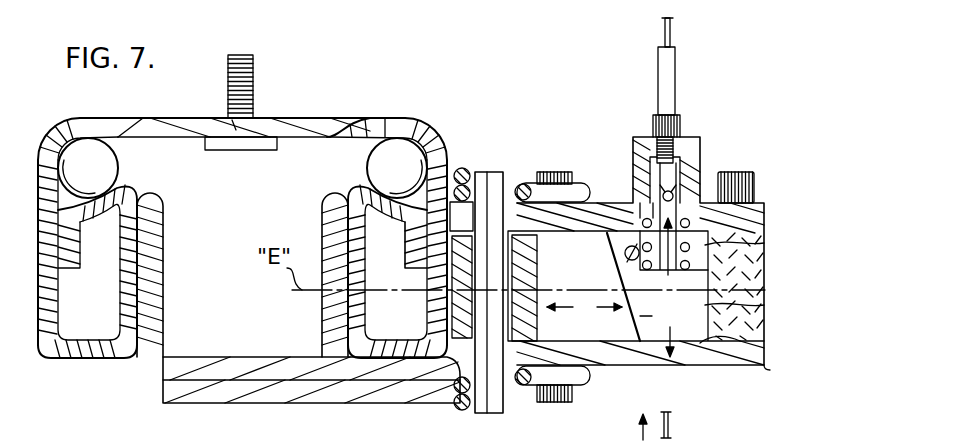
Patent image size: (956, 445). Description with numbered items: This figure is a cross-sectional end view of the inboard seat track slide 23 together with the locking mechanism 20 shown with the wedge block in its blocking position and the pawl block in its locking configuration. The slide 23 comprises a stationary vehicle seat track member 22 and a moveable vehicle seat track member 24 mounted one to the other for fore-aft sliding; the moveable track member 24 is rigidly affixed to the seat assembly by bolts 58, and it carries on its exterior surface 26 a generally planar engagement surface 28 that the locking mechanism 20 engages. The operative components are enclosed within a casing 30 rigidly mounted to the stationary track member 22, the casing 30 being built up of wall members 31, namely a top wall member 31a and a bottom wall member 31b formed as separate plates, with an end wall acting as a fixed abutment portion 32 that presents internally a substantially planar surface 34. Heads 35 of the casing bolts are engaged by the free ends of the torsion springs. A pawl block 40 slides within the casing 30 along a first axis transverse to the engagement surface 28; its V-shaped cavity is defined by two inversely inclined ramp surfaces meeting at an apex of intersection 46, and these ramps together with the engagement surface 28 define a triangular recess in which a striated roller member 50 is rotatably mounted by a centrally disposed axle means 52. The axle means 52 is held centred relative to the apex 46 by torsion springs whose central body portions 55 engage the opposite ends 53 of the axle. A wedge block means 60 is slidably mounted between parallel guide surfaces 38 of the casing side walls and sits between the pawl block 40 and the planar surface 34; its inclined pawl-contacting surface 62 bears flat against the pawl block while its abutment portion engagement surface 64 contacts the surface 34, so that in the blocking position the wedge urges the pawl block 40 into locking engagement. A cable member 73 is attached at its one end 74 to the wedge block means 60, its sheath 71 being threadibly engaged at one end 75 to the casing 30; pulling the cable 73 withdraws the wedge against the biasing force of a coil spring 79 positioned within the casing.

The locking mechanism 20 is at (537, 95).
The stationary vehicle seat track member 22 is at (322, 375).
The inboard seat track slide 23 is at (77, 356).
The moveable vehicle seat track member 24 is at (305, 118).
The exterior surface 26 is at (457, 113).
The generally planar engagement surface 28 is at (427, 283).
The casing 30 is at (764, 368).
The valve body 31 is at (764, 272).
The top wall member 31a is at (597, 203).
The bottom wall member 31b is at (670, 358).
The fixed abutment portion 32 is at (764, 305).
The substantially planar surface 34 is at (739, 313).
The bolt heads 35 is at (570, 172).
The parallel guide surface 38 is at (760, 243).
The pawl block 40 is at (607, 343).
The apex of intersection 46 is at (538, 249).
The striated roller member 50 is at (530, 314).
The axle means 52 is at (417, 250).
The opposite end of axle means 53 is at (482, 170).
The central body portion of torsion spring 55 is at (587, 182).
The bolts 58 is at (255, 67).
The wedge block means 60 is at (672, 414).
The pawl-contacting surface 62 is at (737, 286).
The abutment portion engagement surface 64 is at (733, 347).
The sheath 71 is at (677, 80).
The cable member 73 is at (673, 33).
The one end of cable member 74 is at (669, 183).
The one end of sheath 75 is at (681, 127).
The coil spring 79 is at (640, 203).